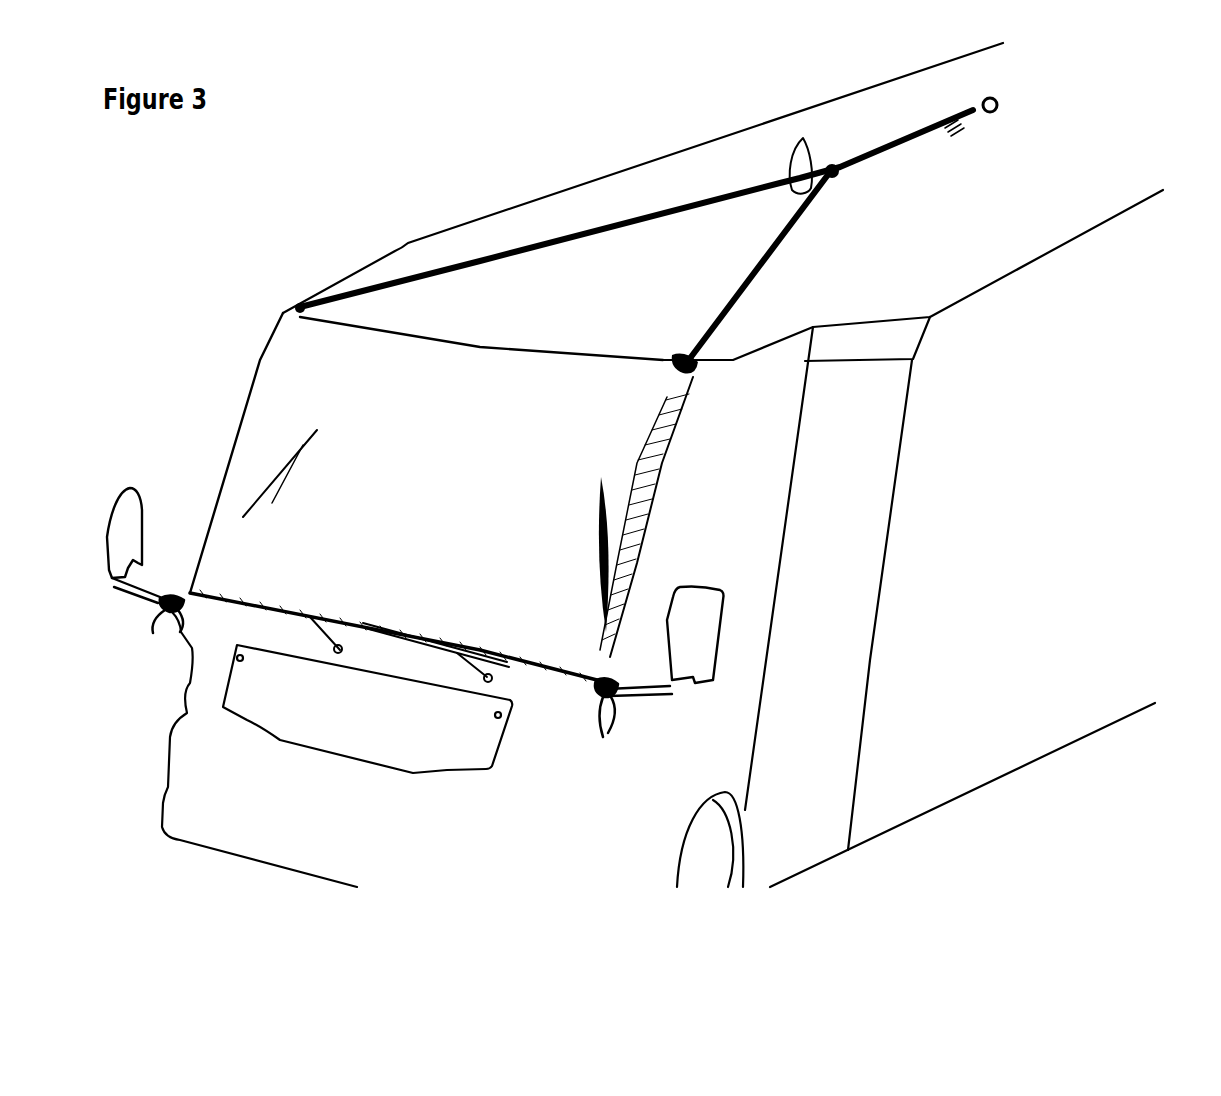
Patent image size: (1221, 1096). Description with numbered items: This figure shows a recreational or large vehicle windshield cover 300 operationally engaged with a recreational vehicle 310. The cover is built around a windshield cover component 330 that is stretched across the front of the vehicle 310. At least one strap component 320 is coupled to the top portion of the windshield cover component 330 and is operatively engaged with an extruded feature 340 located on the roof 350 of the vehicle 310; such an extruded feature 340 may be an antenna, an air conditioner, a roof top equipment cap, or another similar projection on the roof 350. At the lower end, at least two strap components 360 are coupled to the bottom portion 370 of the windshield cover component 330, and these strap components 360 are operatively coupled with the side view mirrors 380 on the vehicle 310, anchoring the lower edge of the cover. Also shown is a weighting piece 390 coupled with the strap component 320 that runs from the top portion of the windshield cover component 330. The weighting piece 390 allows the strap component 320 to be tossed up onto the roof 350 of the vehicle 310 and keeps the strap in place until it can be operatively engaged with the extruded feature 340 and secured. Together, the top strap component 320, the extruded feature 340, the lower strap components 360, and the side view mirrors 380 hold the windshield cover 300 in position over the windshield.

The windshield cover 300 is at (220, 332).
The recreational vehicle 310 is at (662, 465).
The strap component 320 is at (760, 265).
The windshield cover component 330 is at (522, 368).
The extruded feature 340 is at (812, 162).
The roof 350 is at (739, 146).
The strap components 360 is at (147, 631).
The bottom portion 370 is at (538, 678).
The side view mirrors 380 is at (130, 510).
The weighting piece 390 is at (962, 128).